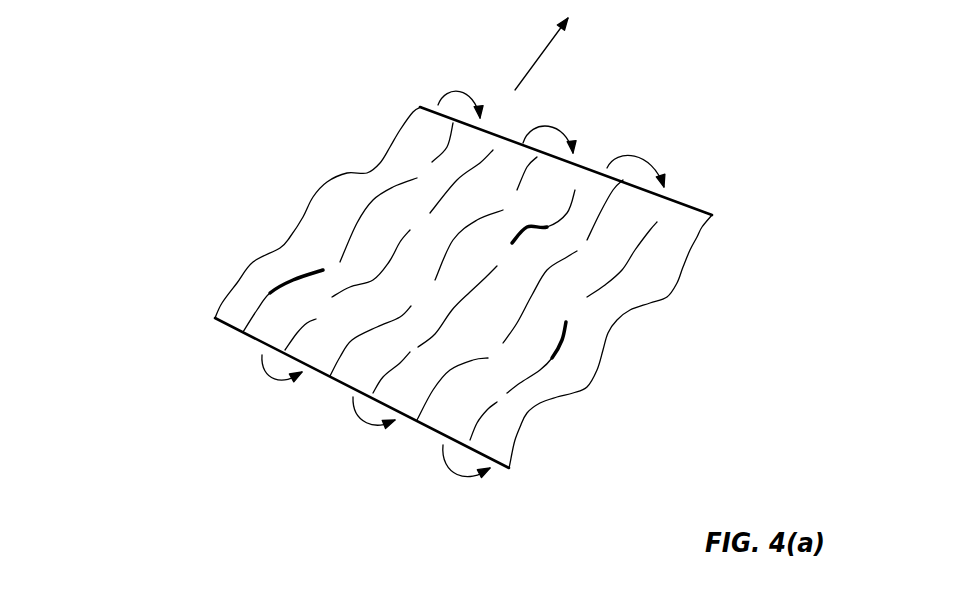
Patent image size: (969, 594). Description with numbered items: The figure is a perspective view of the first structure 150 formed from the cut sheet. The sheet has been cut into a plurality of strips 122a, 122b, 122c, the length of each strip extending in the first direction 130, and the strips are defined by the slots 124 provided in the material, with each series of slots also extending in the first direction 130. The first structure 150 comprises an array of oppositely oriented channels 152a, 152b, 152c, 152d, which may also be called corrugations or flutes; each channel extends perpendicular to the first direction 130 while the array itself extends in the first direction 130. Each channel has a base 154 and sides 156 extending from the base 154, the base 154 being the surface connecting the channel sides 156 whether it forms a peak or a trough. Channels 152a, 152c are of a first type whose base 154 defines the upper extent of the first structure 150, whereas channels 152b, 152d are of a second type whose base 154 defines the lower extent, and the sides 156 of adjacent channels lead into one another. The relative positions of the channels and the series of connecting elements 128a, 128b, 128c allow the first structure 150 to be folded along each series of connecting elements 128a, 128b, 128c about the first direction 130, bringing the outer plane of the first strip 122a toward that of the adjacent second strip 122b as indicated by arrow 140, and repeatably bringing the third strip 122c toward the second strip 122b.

The first structure 150 is at (760, 113).
The first strip 122a is at (512, 462).
The second strip 122b is at (467, 441).
The third strip 122c is at (593, 190).
The slots 124 is at (300, 280).
The first series of connecting elements 128a is at (493, 402).
The second series of connecting elements 128b is at (490, 355).
The third series of connecting elements 128c is at (408, 357).
The first direction 130 is at (556, 54).
The arrow 140 is at (463, 303).
The first channel 152a is at (543, 425).
The second channel 152b is at (280, 240).
The third channel 152c is at (627, 332).
The fourth channel 152d is at (365, 155).
The base 154 is at (665, 285).
The sides 156 is at (587, 280).